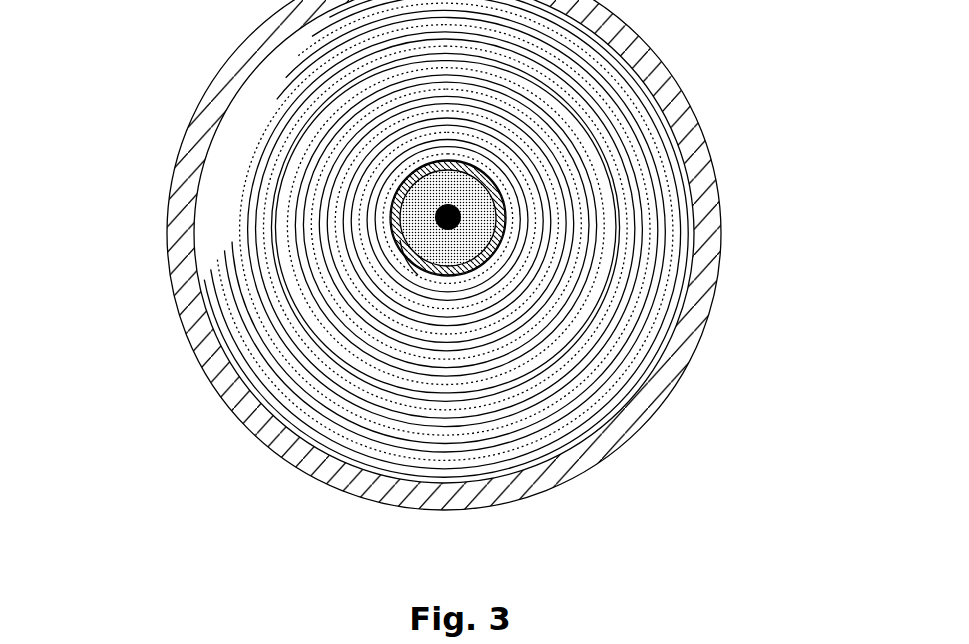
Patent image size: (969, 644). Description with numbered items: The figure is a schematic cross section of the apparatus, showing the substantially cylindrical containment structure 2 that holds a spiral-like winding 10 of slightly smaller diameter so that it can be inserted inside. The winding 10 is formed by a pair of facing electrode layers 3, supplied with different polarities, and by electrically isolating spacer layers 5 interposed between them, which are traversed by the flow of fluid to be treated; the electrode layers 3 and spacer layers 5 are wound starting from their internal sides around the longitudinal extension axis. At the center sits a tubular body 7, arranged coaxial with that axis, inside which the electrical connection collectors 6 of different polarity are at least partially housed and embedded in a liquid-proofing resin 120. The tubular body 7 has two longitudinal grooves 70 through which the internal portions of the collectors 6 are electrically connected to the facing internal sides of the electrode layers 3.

The containment structure 2 is at (687, 98).
The electrode layers 3 is at (238, 231).
The spacer layers 5 is at (228, 248).
The electrical connection collectors 6 is at (455, 212).
The tubular body 7 is at (418, 275).
The spiral-like winding 10 is at (410, 294).
The longitudinal grooves 70 is at (437, 170).
The liquid-proofing resin 120 is at (477, 230).